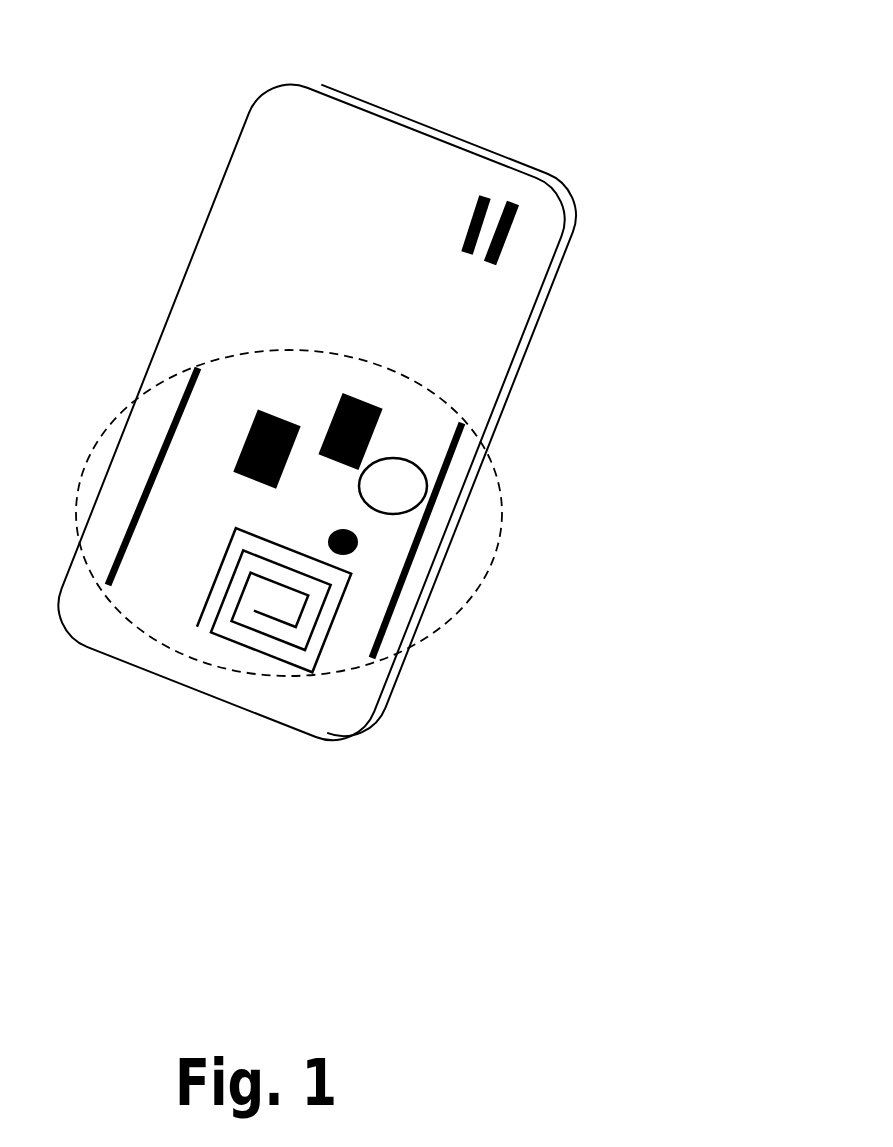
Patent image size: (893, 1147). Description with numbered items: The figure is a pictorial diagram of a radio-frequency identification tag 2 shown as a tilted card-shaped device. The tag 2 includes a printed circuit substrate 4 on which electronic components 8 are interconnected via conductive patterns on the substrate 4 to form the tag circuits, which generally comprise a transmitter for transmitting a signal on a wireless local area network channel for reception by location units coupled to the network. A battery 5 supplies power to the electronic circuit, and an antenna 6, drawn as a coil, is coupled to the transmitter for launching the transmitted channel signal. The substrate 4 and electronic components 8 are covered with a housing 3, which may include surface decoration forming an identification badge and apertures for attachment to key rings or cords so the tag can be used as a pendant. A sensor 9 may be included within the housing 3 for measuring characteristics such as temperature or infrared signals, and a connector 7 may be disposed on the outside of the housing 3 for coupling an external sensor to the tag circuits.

The radio-frequency identification (RFID) tag 2 is at (638, 95).
The housing 3 is at (226, 164).
The printed circuit substrate 4 is at (432, 517).
The battery 5 is at (418, 475).
The antenna 6 is at (330, 643).
The connector 7 is at (512, 202).
The electronic components 8 is at (337, 405).
The sensor 9 is at (365, 552).